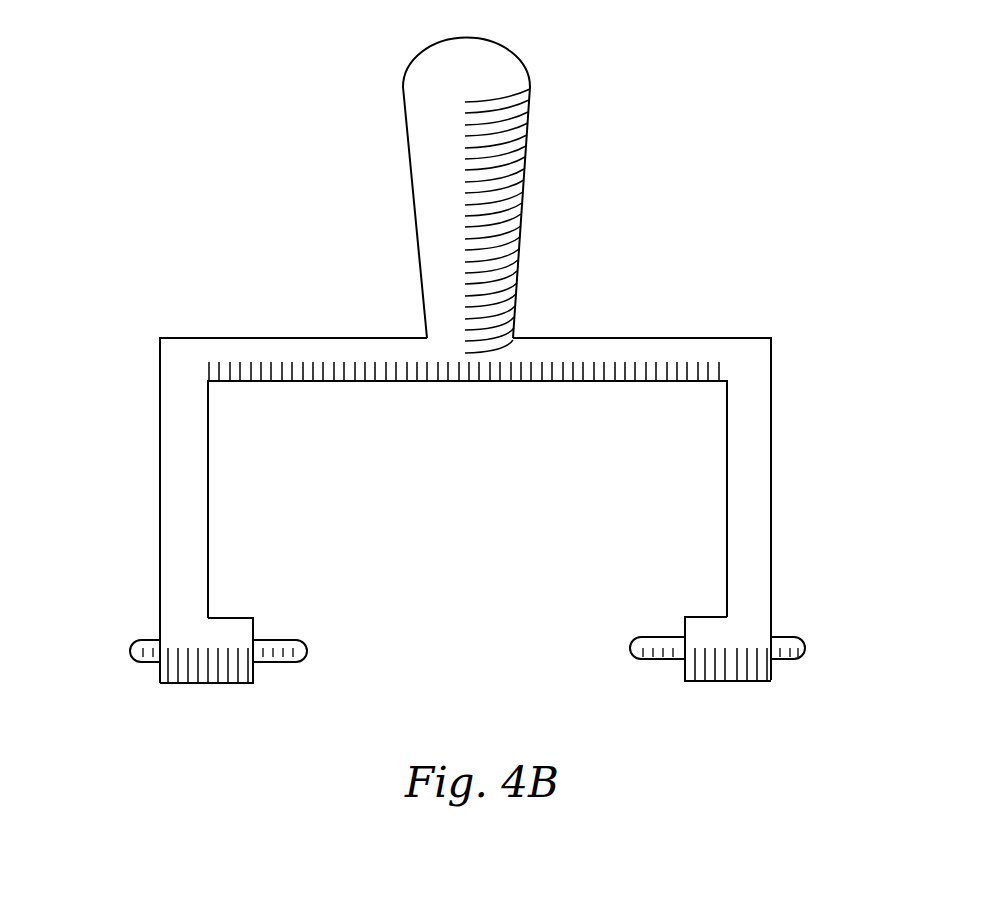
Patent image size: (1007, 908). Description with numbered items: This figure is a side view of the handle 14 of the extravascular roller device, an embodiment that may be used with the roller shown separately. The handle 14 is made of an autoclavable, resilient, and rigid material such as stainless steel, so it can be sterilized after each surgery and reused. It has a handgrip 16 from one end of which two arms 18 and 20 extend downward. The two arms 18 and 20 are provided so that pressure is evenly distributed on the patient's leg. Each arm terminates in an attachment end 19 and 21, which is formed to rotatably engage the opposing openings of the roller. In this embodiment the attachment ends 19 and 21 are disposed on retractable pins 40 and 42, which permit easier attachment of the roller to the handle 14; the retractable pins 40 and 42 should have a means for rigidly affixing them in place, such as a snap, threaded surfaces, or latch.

The handle 14 is at (770, 305).
The handgrip 16 is at (523, 182).
The arm 18 is at (771, 423).
The attachment end 19 is at (270, 640).
The arm 20 is at (160, 480).
The attachment end 21 is at (662, 637).
The retractable pin 40 is at (152, 640).
The retractable pin 42 is at (793, 637).